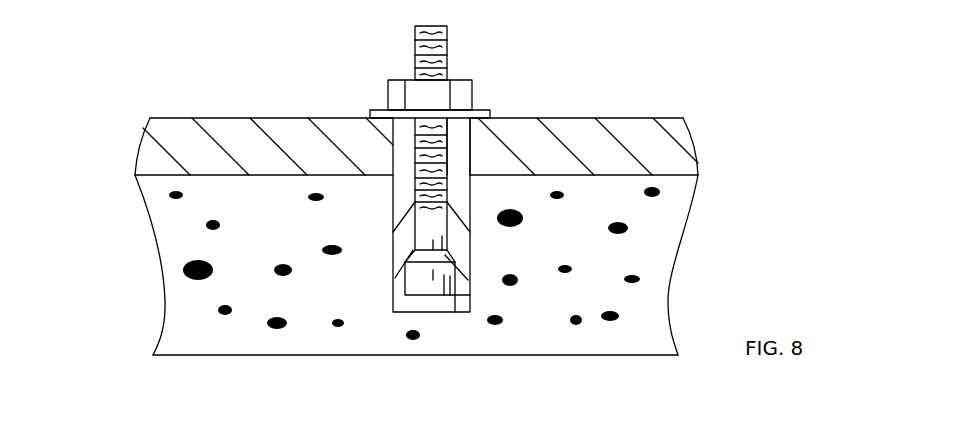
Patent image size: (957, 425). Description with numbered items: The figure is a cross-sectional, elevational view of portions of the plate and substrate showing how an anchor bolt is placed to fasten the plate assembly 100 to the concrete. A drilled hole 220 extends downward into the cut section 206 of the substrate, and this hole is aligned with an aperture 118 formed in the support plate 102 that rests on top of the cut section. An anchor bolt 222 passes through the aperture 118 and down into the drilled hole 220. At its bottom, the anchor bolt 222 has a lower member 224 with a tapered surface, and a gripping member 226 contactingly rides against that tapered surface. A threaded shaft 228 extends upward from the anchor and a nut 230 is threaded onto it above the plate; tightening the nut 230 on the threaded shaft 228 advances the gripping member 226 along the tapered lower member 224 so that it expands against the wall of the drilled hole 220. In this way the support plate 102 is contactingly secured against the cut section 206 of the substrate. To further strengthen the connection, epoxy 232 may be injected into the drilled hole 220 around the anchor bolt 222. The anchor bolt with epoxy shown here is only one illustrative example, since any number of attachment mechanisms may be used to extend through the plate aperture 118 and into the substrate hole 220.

The plate assembly 100 is at (725, 48).
The support plate 102 is at (153, 153).
The aperture 118 is at (473, 170).
The cut section 206 is at (165, 233).
The drilled hole 220 is at (470, 300).
The anchor bolt 222 is at (378, 63).
The lower member 224 is at (425, 282).
The gripping member 226 is at (400, 248).
The threaded shaft 228 is at (448, 52).
The nut 230 is at (466, 93).
The epoxy 232 is at (403, 155).